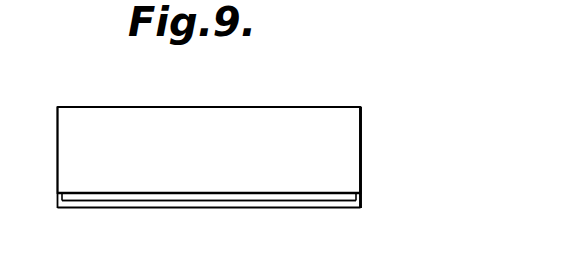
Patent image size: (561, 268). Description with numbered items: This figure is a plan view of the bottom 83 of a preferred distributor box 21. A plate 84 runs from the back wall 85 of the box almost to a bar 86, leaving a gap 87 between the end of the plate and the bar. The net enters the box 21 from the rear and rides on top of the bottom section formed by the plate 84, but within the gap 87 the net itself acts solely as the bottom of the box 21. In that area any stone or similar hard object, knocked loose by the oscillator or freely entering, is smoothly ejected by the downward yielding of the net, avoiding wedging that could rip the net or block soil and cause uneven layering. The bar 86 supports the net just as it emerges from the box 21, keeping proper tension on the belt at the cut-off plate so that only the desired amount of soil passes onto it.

The distributor box 21 is at (323, 108).
The bottom 83 is at (349, 158).
The plate 84 is at (229, 157).
The back wall 85 is at (113, 107).
The bar 86 is at (278, 208).
The gap 87 is at (122, 196).